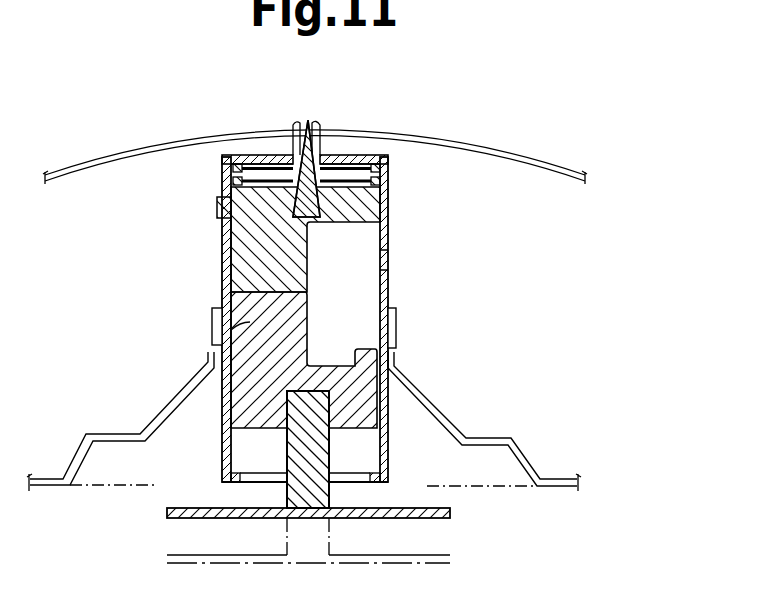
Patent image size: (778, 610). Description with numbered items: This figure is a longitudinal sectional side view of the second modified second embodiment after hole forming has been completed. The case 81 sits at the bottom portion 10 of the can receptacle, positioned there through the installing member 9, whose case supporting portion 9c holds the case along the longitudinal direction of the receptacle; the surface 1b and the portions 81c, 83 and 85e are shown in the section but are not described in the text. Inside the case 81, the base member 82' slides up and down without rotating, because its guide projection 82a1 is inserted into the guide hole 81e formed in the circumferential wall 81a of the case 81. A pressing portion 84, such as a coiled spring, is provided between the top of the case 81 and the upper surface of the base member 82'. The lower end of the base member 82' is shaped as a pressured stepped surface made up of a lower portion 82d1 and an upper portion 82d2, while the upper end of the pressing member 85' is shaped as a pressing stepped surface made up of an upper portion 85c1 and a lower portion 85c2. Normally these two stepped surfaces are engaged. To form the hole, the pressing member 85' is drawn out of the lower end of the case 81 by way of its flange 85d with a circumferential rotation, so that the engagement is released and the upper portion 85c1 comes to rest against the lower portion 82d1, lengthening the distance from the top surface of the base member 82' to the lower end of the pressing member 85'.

The bottom portion 10 is at (315, 142).
The inner surface of outer member 1b is at (382, 132).
The case 81 is at (300, 274).
The circumferential wall 81a is at (386, 290).
The housing claws 81c is at (329, 158).
The guide hole 81e is at (222, 232).
The base member 82' is at (296, 254).
The guide projection 82a1 is at (218, 210).
The lower portion of pressured stepped surface 82d1 is at (225, 308).
The upper portion of pressured stepped surface 82d2 is at (386, 260).
The conical spring 83 is at (301, 150).
The pressing portion 84 is at (352, 165).
The pressing member 85' is at (301, 384).
The upper portion of pressing stepped surface 85c1 is at (242, 274).
The lower portion of pressing stepped surface 85c2 is at (386, 352).
The flange 85d is at (452, 515).
The slider shaft 85e is at (352, 405).
The installing member 9 is at (304, 418).
The case supporting portion 9c is at (213, 345).